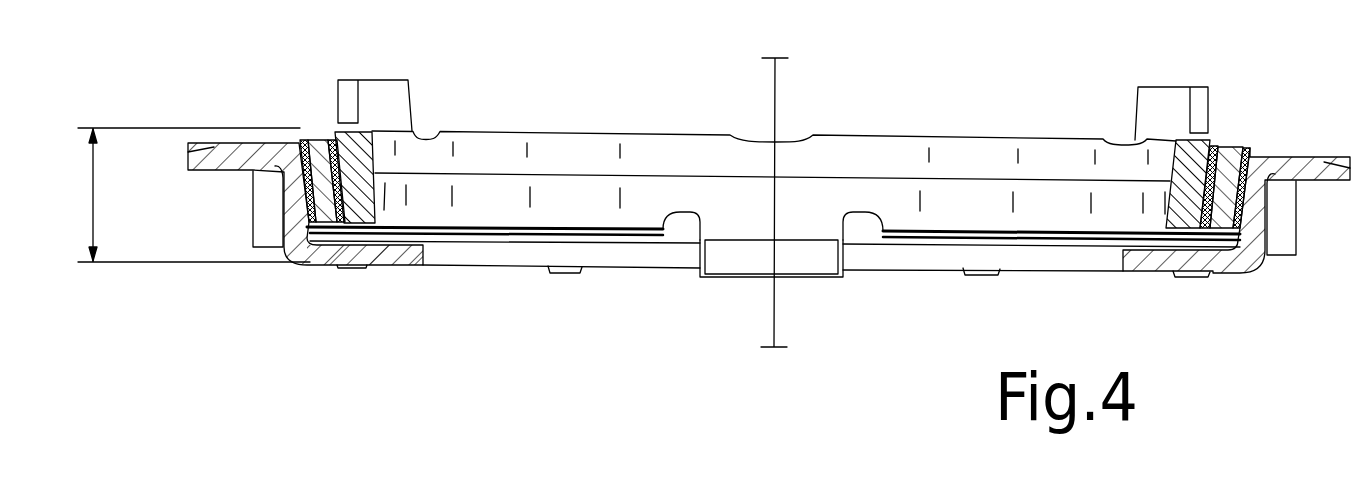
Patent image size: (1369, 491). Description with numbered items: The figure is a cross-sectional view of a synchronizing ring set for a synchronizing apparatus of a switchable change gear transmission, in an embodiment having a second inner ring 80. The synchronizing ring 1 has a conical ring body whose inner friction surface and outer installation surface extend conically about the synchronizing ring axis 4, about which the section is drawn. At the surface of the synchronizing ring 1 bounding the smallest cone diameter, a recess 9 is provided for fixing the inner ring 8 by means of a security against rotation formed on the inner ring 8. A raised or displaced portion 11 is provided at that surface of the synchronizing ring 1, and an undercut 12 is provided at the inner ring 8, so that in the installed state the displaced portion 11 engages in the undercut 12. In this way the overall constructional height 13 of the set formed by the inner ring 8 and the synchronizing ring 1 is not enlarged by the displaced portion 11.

The synchronizing ring 1 is at (1283, 175).
The synchronizing ring axis 4 is at (778, 122).
The inner ring 8 is at (347, 163).
The second inner ring 80 is at (1228, 165).
The recess 9 is at (760, 257).
The displaced portion 11 is at (673, 238).
The undercut 12 is at (682, 220).
The overall constructional height 13 is at (92, 188).